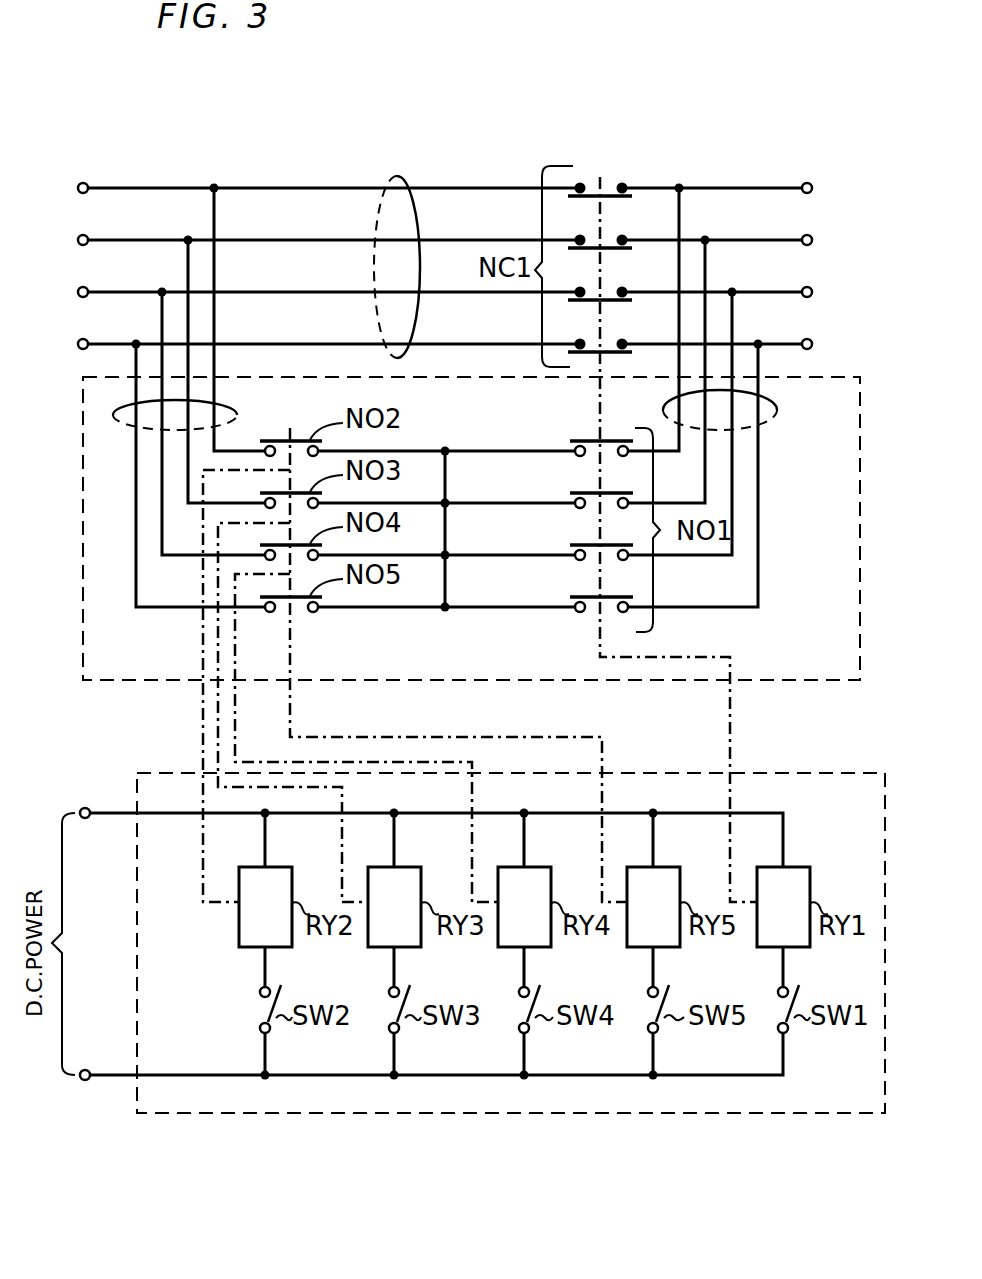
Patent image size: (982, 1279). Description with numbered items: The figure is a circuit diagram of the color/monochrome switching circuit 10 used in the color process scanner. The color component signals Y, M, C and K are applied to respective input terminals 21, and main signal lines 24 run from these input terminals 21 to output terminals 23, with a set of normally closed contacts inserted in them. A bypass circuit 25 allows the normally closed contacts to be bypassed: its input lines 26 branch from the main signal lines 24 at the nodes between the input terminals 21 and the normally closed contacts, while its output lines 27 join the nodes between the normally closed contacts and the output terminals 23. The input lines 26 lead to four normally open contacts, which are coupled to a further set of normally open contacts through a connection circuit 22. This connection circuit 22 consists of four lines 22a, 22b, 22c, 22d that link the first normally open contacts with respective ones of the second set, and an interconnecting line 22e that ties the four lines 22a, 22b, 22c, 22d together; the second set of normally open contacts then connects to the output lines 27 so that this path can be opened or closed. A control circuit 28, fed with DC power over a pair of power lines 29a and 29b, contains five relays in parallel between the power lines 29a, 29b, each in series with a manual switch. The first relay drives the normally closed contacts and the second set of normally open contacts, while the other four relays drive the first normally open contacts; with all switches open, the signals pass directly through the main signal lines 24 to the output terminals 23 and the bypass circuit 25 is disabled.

The color/monochrome switching circuit 10 is at (505, 135).
The input terminals 21 is at (95, 254).
The connection circuit 22 is at (510, 447).
The line 22a is at (415, 447).
The line 22b is at (425, 502).
The line 22c is at (425, 553).
The line 22d is at (400, 610).
The interconnecting line 22e is at (448, 532).
The output terminals 23 is at (808, 254).
The main signal lines 24 is at (406, 182).
The bypass circuit 25 is at (790, 686).
The input lines 26 is at (237, 415).
The output lines 27 is at (777, 410).
The control circuit 28 is at (785, 774).
The power line 29a is at (178, 816).
The power line 29b is at (176, 1073).